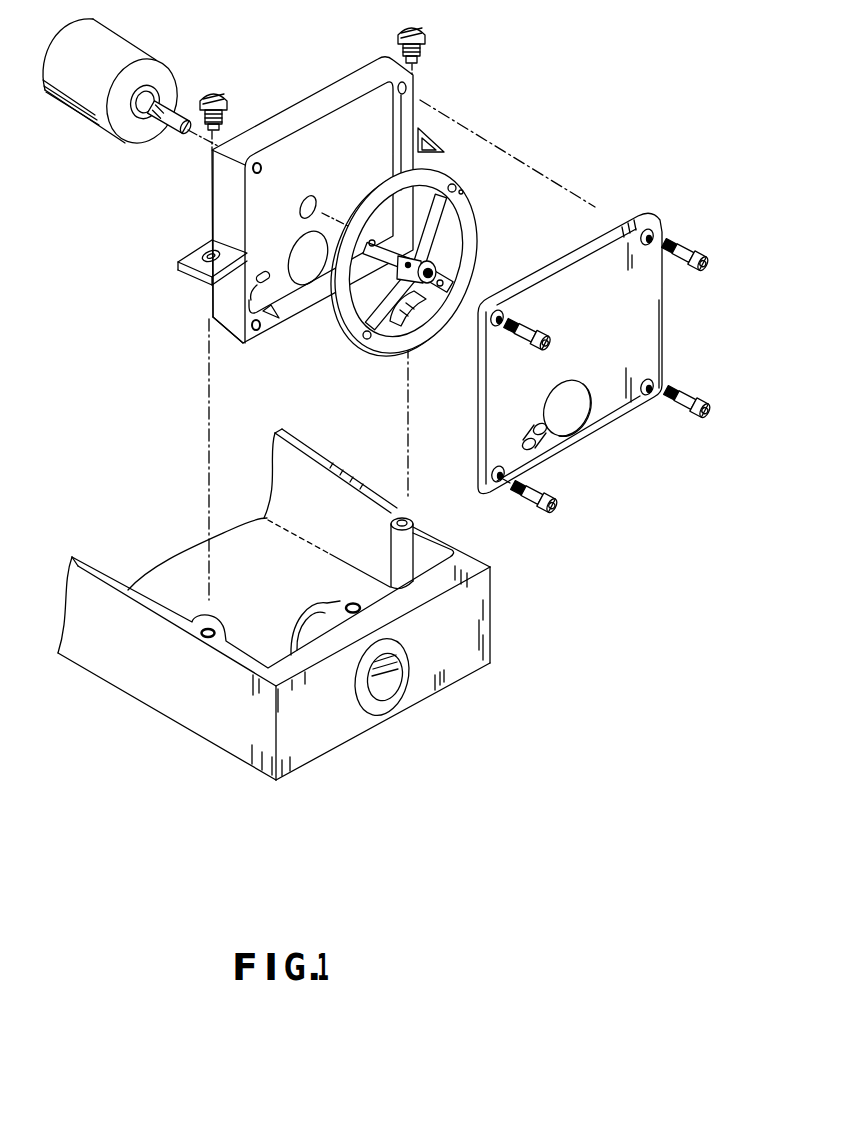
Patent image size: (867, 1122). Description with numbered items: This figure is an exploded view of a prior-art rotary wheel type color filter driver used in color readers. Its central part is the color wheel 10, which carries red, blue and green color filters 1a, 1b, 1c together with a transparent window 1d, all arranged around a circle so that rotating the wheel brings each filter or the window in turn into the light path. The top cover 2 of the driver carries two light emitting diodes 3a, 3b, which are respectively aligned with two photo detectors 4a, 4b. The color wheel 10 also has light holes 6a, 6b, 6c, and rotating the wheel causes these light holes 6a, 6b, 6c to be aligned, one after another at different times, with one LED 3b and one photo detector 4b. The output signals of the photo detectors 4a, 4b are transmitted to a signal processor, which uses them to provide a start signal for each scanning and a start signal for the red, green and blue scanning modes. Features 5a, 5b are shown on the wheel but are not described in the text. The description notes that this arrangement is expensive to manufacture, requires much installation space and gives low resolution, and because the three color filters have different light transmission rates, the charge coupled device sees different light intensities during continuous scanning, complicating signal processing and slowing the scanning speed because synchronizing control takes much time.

The red color filter 1a is at (410, 242).
The blue color filter 1b is at (447, 252).
The green color filter 1c is at (360, 312).
The transparent window 1d is at (427, 300).
The top cover 2 is at (600, 420).
The LED 3a is at (537, 449).
The LED 3b is at (547, 438).
The photo detector 4a is at (211, 320).
The photo detector 4b is at (267, 271).
The locating pin hole 5a is at (367, 339).
The locating pin hole 5b is at (450, 200).
The light hole 6a is at (371, 240).
The light hole 6b is at (462, 192).
The light hole 6c is at (441, 286).
The color wheel 10 is at (470, 213).